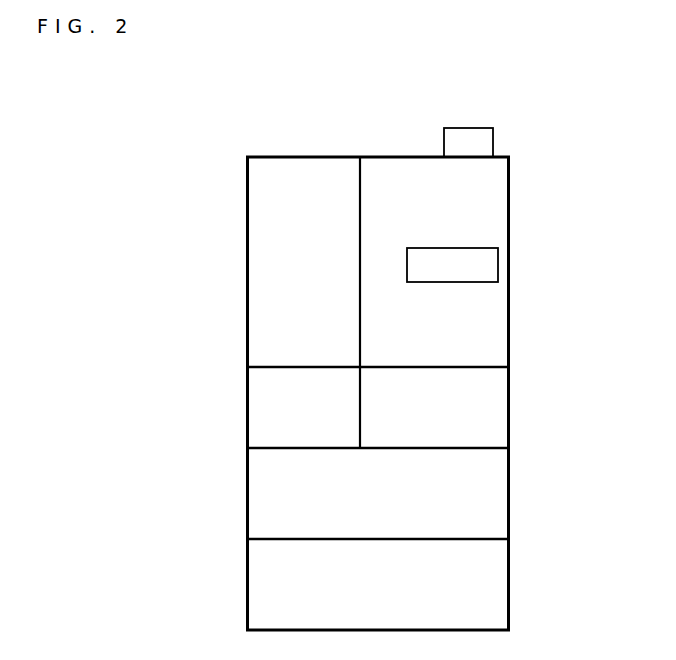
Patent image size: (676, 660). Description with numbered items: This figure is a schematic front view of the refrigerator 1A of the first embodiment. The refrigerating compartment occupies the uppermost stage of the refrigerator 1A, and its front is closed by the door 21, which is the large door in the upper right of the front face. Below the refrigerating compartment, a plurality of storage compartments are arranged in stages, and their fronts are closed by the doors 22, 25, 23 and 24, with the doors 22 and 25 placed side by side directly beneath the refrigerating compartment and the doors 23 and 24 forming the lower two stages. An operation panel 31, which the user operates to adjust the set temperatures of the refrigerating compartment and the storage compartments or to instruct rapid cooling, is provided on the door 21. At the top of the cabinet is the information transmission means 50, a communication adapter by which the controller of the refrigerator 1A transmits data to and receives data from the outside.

The refrigerator 1A is at (218, 165).
The door 21 is at (472, 325).
The door 22 is at (278, 407).
The door 23 is at (472, 495).
The door 24 is at (472, 580).
The door 25 is at (472, 403).
The operation panel 31 is at (472, 263).
The information transmission means 50 is at (452, 139).